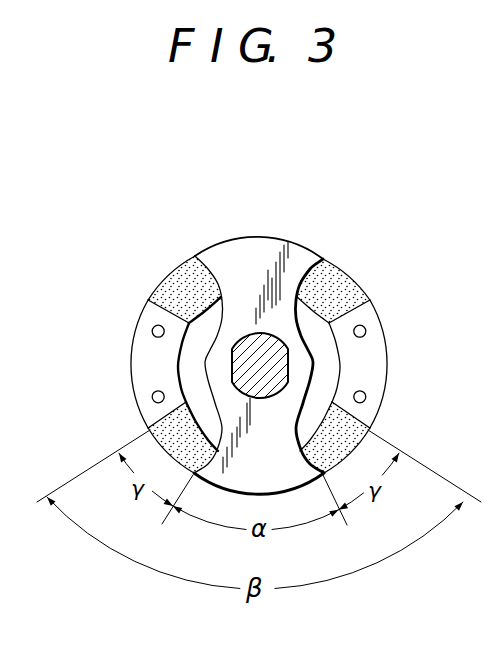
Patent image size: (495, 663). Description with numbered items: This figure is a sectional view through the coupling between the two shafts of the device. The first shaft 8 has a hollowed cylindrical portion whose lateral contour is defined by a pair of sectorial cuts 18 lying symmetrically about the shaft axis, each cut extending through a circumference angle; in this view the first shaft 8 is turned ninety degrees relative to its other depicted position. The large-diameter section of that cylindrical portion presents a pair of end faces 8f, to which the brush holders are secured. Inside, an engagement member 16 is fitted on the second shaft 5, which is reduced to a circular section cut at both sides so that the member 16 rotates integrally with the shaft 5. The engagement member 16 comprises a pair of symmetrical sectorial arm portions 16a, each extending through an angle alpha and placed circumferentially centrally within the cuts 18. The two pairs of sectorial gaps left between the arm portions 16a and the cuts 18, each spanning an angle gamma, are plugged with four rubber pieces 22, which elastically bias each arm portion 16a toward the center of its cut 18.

The second shaft 5 is at (258, 352).
The first shaft 8 is at (386, 300).
The end faces 8f is at (137, 358).
The engagement member 16 is at (300, 358).
The sectorial arm portions 16a is at (292, 252).
The sectorial cuts 18 is at (161, 292).
The rubber pieces 22 is at (188, 283).